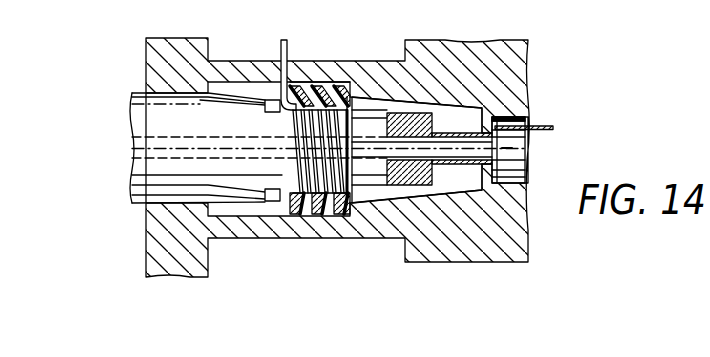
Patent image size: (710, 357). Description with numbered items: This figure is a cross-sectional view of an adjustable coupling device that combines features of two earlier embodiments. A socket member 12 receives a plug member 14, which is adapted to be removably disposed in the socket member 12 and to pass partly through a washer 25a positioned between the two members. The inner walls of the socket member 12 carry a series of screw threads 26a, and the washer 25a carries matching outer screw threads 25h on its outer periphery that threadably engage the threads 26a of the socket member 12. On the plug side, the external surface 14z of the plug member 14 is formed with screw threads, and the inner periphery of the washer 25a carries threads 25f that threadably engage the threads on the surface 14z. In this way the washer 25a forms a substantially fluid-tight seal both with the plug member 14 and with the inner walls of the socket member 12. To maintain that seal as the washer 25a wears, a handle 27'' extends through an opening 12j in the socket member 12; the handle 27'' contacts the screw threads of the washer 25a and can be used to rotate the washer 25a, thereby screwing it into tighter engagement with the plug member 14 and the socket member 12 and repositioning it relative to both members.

The socket member 12 is at (229, 68).
The opening 12j is at (300, 66).
The plug member 14 is at (143, 167).
The external surface 14z is at (277, 212).
The washer 25a is at (310, 212).
The inner periphery threads 25f is at (333, 212).
The outer screw threads 25h is at (372, 232).
The screw threads 26a is at (337, 66).
The handle 27'' is at (291, 57).